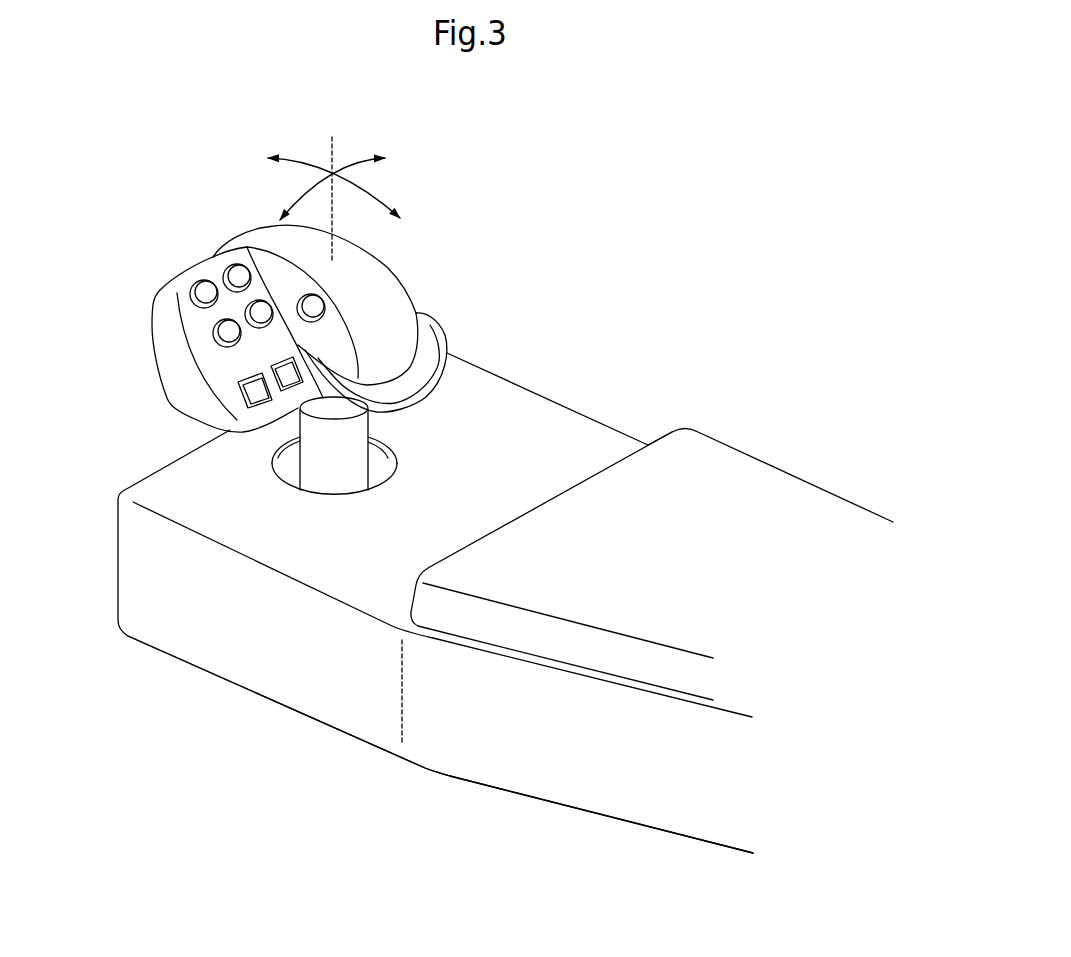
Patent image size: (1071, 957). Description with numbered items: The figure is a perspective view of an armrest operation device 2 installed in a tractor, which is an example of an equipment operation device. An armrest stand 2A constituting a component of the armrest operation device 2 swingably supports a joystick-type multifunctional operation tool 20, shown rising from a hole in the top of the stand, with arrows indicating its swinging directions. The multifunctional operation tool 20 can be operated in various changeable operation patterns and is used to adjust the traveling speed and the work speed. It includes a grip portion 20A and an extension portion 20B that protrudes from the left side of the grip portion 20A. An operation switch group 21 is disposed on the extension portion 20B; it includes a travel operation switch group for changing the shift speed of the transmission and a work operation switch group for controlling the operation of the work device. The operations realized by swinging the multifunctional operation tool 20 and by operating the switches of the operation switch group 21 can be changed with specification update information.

The armrest operation device 2 is at (682, 327).
The armrest stand 2A is at (452, 750).
The multifunctional operation tool 20 is at (140, 255).
The grip portion 20A is at (400, 282).
The extension portion 20B is at (153, 332).
The operation switch group 21 is at (237, 362).